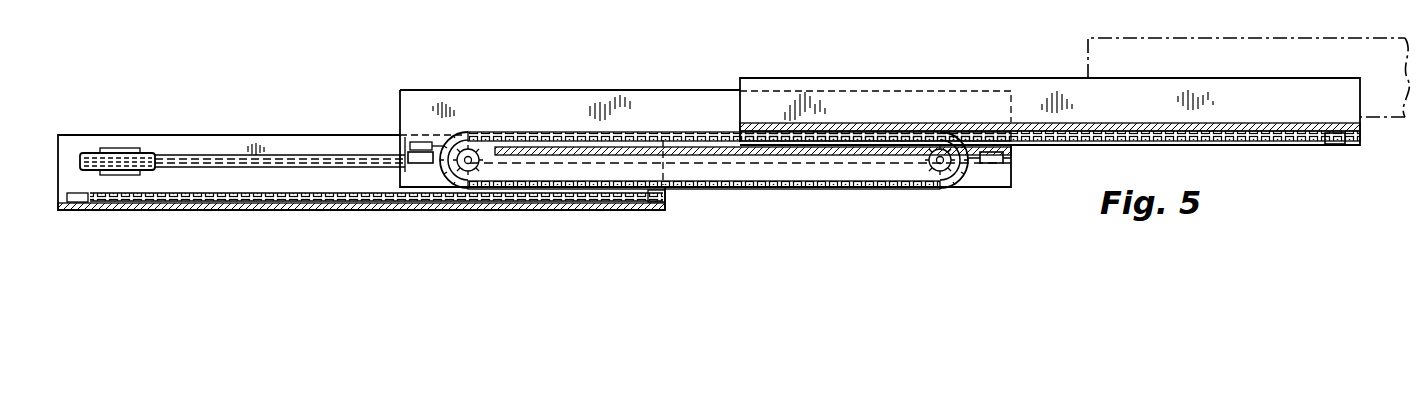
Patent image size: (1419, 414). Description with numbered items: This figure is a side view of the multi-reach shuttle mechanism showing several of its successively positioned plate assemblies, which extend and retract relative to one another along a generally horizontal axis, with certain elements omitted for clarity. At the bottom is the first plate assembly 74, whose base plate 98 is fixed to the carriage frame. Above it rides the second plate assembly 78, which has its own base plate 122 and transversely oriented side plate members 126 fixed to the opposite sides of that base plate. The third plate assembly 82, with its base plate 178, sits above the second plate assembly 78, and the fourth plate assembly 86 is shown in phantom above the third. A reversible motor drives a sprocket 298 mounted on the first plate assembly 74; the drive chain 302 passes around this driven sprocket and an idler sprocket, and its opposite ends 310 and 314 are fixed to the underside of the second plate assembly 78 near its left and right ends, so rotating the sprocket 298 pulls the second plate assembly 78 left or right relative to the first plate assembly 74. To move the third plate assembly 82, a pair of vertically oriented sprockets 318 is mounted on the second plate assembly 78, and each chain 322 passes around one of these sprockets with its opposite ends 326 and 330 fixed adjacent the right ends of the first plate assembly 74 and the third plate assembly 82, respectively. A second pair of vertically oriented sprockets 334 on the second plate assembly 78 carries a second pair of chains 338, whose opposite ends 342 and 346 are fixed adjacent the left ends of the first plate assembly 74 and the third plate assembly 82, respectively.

The first plate assembly 74 is at (216, 132).
The second plate assembly 78 is at (479, 89).
The third plate assembly 82 is at (957, 53).
The fourth plate assembly 86 is at (1172, 34).
The base plate 98 is at (357, 181).
The base plate 122 is at (405, 137).
The side plate members 126 is at (553, 90).
The base plate 178 is at (1125, 113).
The sprocket 298 is at (92, 155).
The drive chain 302 is at (300, 154).
The end of drive chain 310 is at (426, 165).
The end of drive chain 314 is at (1010, 160).
The sprockets 318 is at (471, 137).
The chains 322 is at (700, 117).
The end of chain 326 is at (648, 203).
The end of chain 330 is at (1333, 147).
The sprockets 334 is at (949, 188).
The chains 338 is at (238, 197).
The end of chain 342 is at (110, 196).
The end of chain 346 is at (760, 150).